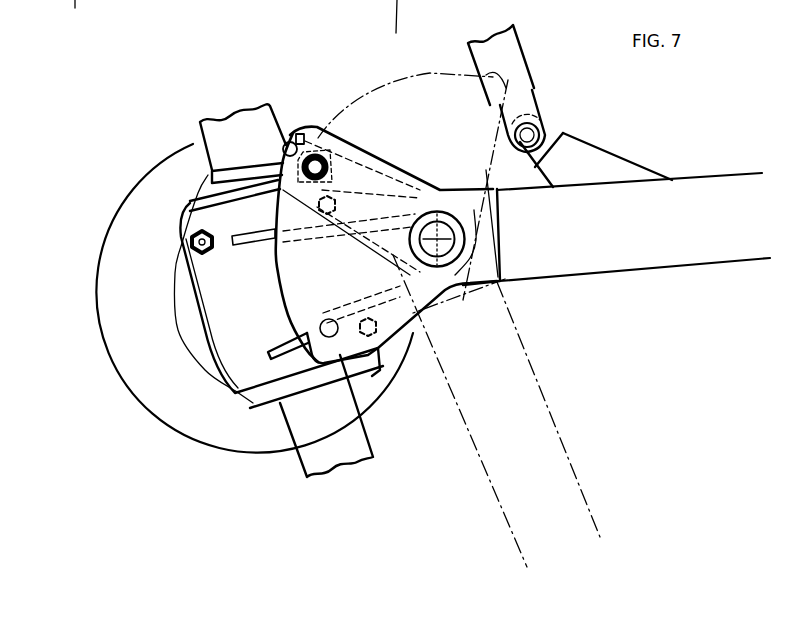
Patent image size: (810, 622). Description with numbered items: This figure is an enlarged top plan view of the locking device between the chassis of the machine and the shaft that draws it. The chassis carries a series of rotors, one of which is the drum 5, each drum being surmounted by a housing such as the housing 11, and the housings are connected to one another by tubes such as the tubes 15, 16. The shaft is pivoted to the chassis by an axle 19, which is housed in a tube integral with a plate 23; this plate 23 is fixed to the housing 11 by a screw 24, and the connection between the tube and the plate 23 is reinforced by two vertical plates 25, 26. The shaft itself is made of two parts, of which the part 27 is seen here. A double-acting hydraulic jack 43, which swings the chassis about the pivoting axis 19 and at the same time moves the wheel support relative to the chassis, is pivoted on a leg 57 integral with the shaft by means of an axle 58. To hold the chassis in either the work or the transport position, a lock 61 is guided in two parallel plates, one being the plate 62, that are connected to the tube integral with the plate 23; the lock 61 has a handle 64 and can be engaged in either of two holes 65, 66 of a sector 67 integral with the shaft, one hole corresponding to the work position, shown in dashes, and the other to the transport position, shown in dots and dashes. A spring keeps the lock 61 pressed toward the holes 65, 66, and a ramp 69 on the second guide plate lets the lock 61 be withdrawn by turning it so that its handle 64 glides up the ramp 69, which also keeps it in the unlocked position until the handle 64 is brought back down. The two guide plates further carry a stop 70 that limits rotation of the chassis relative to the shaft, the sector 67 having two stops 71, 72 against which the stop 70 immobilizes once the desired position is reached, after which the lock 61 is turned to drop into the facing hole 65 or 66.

The drum 5 is at (163, 412).
The housing 11 is at (192, 329).
The tube 15 is at (211, 137).
The tube 16 is at (313, 457).
The axle 19 is at (445, 247).
The plate 23 is at (213, 292).
The screw 24 is at (194, 240).
The vertical plate 25 is at (192, 210).
The vertical plate 26 is at (278, 358).
The shaft part 27 is at (653, 249).
The hydraulic jack 43 is at (507, 53).
The leg 57 is at (603, 167).
The axle 58 is at (527, 135).
The lock 61 is at (330, 160).
The plate 62 is at (388, 168).
The handle 64 is at (217, 170).
The hole 65 is at (315, 155).
The hole 66 is at (337, 334).
The sector 67 is at (302, 283).
The ramp 69 is at (436, 211).
The stop 70 is at (285, 145).
The stop 71 is at (299, 137).
The stop 72 is at (323, 340).